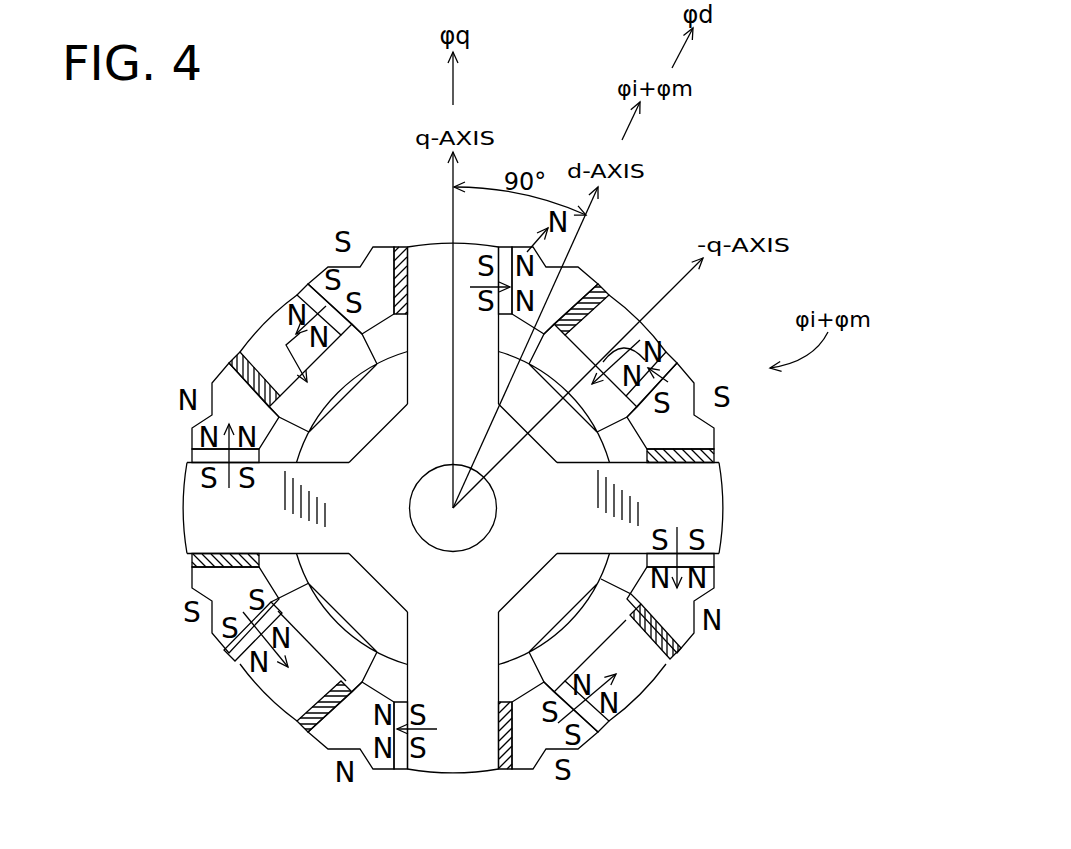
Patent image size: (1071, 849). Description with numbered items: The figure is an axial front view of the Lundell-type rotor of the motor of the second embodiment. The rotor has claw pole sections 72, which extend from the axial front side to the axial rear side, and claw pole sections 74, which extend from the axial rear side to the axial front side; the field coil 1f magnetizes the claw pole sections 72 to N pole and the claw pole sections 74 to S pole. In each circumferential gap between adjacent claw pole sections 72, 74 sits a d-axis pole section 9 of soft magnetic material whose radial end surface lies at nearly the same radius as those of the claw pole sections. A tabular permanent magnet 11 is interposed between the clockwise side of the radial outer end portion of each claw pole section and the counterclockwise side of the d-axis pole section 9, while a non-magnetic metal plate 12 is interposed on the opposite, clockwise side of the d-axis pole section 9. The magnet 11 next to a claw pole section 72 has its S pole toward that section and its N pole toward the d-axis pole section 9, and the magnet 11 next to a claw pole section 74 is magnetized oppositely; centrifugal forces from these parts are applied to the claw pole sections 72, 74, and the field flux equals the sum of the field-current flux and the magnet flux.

The field coil 1f is at (333, 580).
The d-axis pole section 9 is at (330, 262).
The permanent magnet 11 is at (503, 248).
The non-magnetic metal plate 12 is at (406, 248).
The claw pole section 72 is at (422, 252).
The claw pole section 74 is at (615, 318).